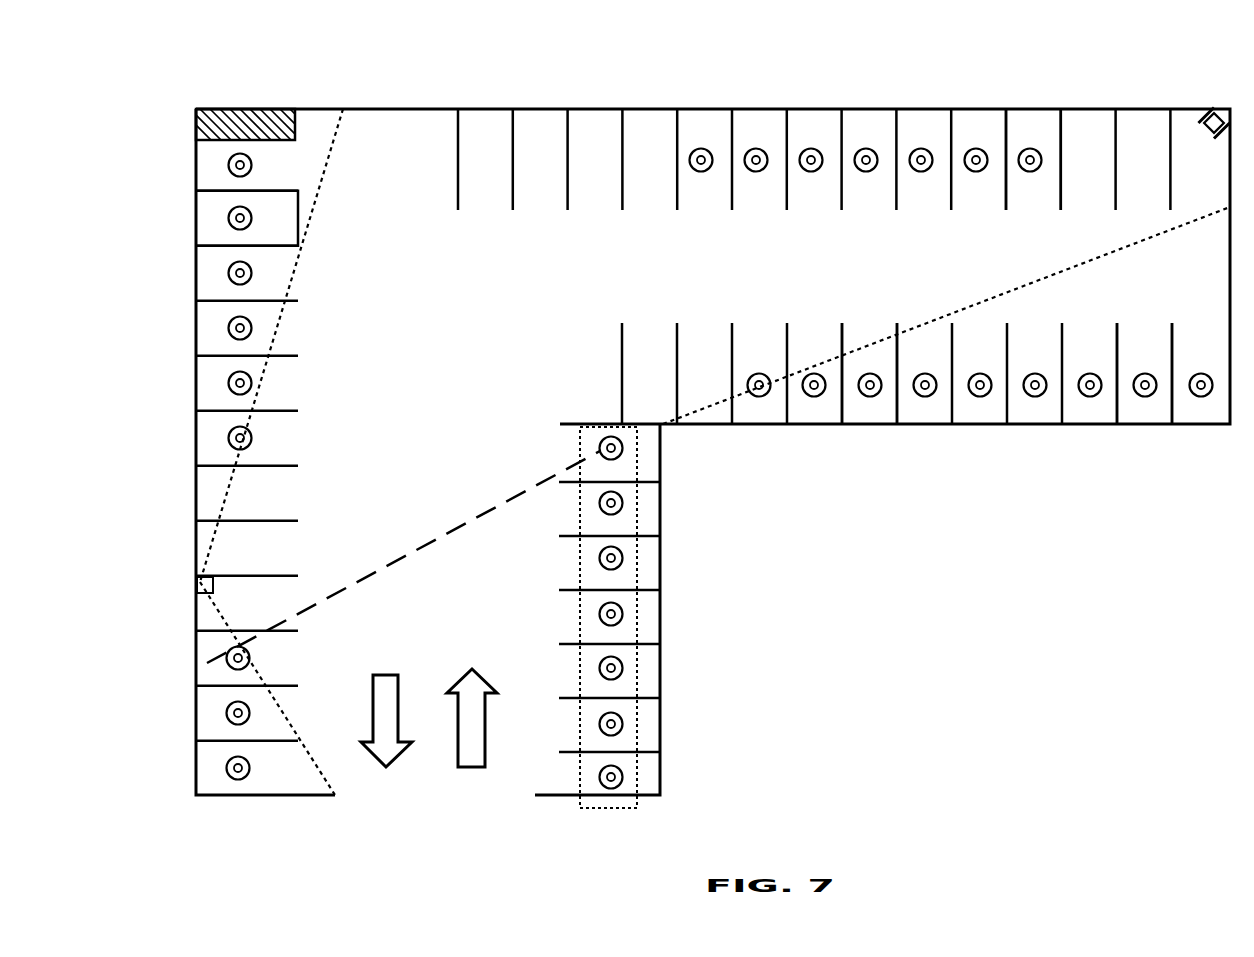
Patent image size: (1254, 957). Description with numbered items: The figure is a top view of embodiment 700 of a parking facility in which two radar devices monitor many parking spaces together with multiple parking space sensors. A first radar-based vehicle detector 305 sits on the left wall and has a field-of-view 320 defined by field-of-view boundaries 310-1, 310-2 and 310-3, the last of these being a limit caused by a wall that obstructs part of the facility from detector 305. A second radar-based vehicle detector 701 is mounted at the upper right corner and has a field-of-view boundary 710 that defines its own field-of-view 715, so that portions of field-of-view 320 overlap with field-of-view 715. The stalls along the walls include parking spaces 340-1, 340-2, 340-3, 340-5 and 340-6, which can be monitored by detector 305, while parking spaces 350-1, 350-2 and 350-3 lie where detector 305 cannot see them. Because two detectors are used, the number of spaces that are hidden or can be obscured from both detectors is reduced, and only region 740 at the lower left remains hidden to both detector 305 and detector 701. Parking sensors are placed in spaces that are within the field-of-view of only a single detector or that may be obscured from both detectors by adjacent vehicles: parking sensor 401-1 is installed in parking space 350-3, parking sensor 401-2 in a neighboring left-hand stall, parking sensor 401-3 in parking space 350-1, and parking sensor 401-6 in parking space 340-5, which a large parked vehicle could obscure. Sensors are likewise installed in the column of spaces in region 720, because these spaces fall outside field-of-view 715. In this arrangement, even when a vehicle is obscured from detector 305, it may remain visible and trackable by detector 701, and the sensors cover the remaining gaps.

The embodiment 700 is at (138, 80).
The radar-based vehicle detector 701 is at (1205, 112).
The radar-based vehicle detector 305 is at (200, 578).
The field-of-view boundary 310-1 is at (328, 165).
The field-of-view boundary 310-2 is at (315, 758).
The field-of-view boundary 310-3 is at (1140, 247).
The field-of-view 320 is at (638, 450).
The parking space 340-1 is at (645, 120).
The parking space 340-2 is at (655, 497).
The parking space 340-3 is at (655, 665).
The parking space 340-5 is at (1016, 120).
The parking space 340-6 is at (686, 340).
The parking space 350-1 is at (873, 413).
The parking space 350-2 is at (1148, 410).
The parking space 350-3 is at (209, 222).
The parking sensor 401-1 is at (228, 218).
The parking sensor 401-2 is at (228, 330).
The parking sensor 401-3 is at (868, 397).
The parking sensor 401-6 is at (1026, 172).
The field-of-view boundary 710 is at (425, 548).
The field-of-view 715 is at (782, 292).
The region 720 is at (597, 808).
The region 740 is at (294, 781).